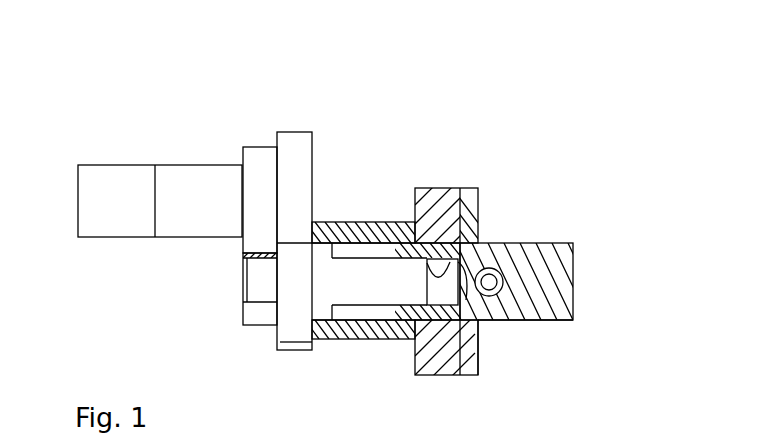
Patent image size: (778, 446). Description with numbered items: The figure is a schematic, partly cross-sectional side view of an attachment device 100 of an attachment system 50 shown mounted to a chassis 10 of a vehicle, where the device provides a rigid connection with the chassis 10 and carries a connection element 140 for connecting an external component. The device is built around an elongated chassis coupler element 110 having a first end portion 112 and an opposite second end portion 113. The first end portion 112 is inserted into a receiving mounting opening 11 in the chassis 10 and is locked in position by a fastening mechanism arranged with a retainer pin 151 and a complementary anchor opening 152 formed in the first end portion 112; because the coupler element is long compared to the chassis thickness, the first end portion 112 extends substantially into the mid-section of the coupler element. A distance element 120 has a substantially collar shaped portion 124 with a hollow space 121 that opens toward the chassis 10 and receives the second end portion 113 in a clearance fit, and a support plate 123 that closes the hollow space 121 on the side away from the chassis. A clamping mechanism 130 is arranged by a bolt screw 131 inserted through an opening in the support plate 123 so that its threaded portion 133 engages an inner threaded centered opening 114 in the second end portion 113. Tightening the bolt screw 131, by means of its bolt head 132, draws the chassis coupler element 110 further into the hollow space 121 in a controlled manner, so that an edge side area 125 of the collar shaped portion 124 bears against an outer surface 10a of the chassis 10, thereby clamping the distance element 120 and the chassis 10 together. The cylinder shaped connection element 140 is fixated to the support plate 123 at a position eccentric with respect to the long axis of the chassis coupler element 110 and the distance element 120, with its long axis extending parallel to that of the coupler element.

The chassis 10 is at (480, 376).
The outer surface of the chassis 10a is at (413, 202).
The receiving mounting opening 11 is at (466, 263).
The attachment system 50 is at (560, 92).
The attachment device 100 is at (373, 238).
The chassis coupler element 110 is at (556, 240).
The first end portion 112 is at (545, 322).
The second end portion 113 is at (476, 313).
The inner threaded centered opening 114 is at (464, 189).
The distance element 120 is at (342, 126).
The hollow space 121 is at (348, 313).
The support plate 123 is at (290, 147).
The collar shaped portion 124 is at (342, 221).
The edge side area 125 is at (398, 310).
The clamping mechanism 130 is at (255, 342).
The bolt screw 131 is at (252, 278).
The bolt head 132 is at (243, 290).
The threaded portion 133 is at (393, 337).
The connection element 140 is at (140, 152).
The retainer pin 151 is at (502, 272).
The anchor opening 152 is at (547, 229).